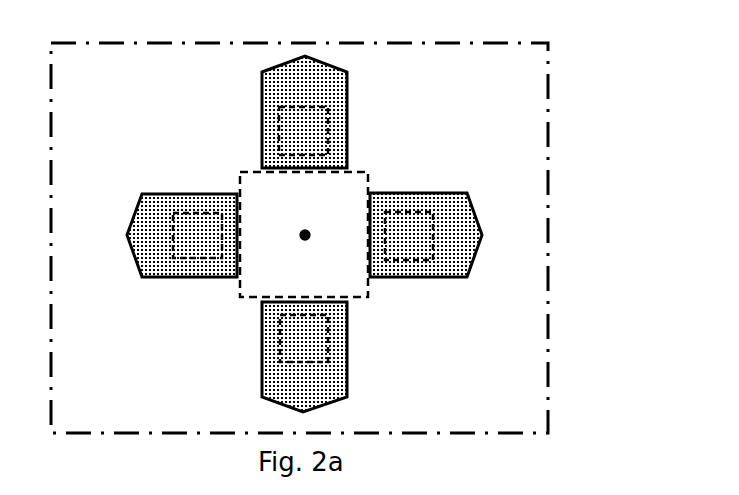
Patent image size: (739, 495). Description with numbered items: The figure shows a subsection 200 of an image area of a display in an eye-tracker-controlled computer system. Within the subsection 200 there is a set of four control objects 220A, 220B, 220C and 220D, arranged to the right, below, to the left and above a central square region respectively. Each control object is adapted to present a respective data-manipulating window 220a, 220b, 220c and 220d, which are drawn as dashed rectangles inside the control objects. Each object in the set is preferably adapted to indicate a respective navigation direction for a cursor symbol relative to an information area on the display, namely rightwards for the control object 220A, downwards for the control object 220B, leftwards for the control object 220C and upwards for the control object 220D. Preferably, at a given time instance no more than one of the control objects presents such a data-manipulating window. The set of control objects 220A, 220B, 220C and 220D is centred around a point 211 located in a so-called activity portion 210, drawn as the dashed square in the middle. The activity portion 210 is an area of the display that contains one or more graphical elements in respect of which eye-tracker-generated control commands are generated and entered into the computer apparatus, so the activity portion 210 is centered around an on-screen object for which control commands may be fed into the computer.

The subsection 200 is at (636, 64).
The activity portion 210 is at (260, 203).
The point 211 is at (376, 282).
The control object 220A is at (507, 233).
The data-manipulating window 220a is at (446, 204).
The control object 220B is at (368, 361).
The data-manipulating window 220b is at (367, 347).
The control object 220C is at (152, 214).
The data-manipulating window 220c is at (167, 273).
The control object 220D is at (365, 112).
The data-manipulating window 220d is at (372, 127).